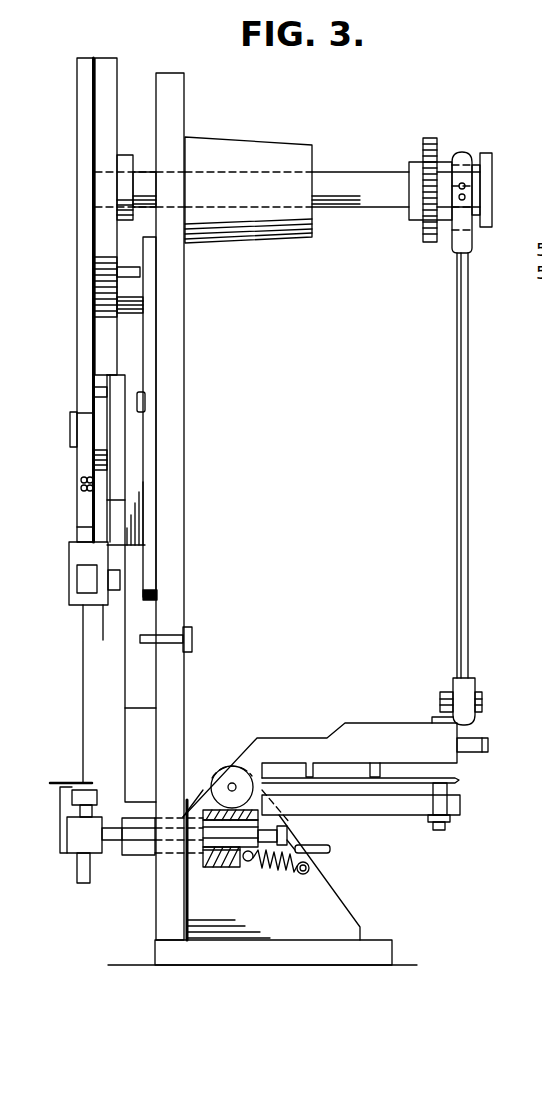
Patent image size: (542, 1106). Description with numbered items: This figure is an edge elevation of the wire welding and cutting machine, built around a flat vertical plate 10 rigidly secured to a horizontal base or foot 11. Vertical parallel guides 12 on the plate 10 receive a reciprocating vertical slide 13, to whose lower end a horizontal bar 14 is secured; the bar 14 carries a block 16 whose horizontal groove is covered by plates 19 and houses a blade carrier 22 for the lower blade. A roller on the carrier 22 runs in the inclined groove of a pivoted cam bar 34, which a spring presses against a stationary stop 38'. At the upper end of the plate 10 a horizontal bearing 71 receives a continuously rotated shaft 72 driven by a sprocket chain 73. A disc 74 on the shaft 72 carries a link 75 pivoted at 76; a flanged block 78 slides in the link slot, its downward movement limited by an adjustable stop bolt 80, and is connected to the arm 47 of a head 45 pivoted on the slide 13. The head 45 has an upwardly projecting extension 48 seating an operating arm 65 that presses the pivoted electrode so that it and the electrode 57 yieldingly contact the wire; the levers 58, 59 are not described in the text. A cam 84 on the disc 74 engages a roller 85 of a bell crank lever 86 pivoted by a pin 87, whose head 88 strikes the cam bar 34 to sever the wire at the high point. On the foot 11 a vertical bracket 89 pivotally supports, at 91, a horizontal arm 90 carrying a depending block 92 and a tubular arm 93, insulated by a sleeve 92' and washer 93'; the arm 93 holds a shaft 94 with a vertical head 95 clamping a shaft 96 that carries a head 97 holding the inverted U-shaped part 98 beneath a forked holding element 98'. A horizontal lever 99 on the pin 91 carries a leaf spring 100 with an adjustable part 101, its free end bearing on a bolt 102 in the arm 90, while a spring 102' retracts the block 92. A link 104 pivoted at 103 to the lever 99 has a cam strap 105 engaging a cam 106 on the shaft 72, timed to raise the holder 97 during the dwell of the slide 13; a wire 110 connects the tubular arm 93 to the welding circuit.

The vertical plate 10 is at (185, 112).
The base or foot 11 is at (303, 958).
The vertical parallel guides 12 is at (140, 465).
The vertical slide 13 is at (110, 508).
The horizontal bar 14 is at (118, 557).
The block 16 is at (101, 694).
The plates 19 is at (69, 598).
The blade carrier 22 is at (85, 578).
The cam bar 34 is at (156, 708).
The stationary stop 38' is at (185, 626).
The head 45 is at (93, 460).
The arm 47 is at (78, 413).
The upwardly projecting extension 48 is at (93, 390).
The electrode 57 is at (533, 373).
The lever 58 is at (530, 328).
The lever 59 is at (530, 351).
The operating arm 65 is at (83, 527).
The horizontal bearing 71 is at (290, 150).
The horizontal rotatable shaft 72 is at (379, 175).
The sprocket chain 73 is at (430, 138).
The disc 74 is at (112, 105).
The link 75 is at (80, 163).
The pivot pin 76 is at (90, 90).
The flanged block 78 is at (70, 437).
The adjustable stop bolt 80 is at (80, 480).
The cam 84 is at (140, 273).
The roller 85 is at (129, 313).
The bell crank lever 86 is at (150, 342).
The pin 87 is at (145, 402).
The head 88 is at (155, 593).
The vertical bracket 89 is at (342, 900).
The horizontal arm 90 is at (397, 815).
The pivot pin 91 is at (230, 785).
The depending block 92 is at (228, 875).
The insulating sleeve 92' is at (226, 888).
The horizontal tubular arm 93 is at (162, 855).
The insulating washer 93' is at (239, 864).
The horizontal shaft 94 is at (110, 845).
The vertical head 95 is at (76, 850).
The shaft 96 is at (80, 883).
The head 97 is at (62, 803).
The inverted U-shaped metallic part 98 is at (93, 784).
The forked holding element 98' is at (69, 769).
The horizontal lever 99 is at (342, 738).
The horizontal leaf spring 100 is at (440, 780).
The adjustable part 101 is at (374, 765).
The bolt 102 is at (473, 806).
The spring 102' is at (283, 884).
The pivot 103 is at (482, 700).
The link 104 is at (470, 575).
The cam strap 105 is at (458, 224).
The cam 106 is at (475, 228).
The wire 110 is at (330, 849).